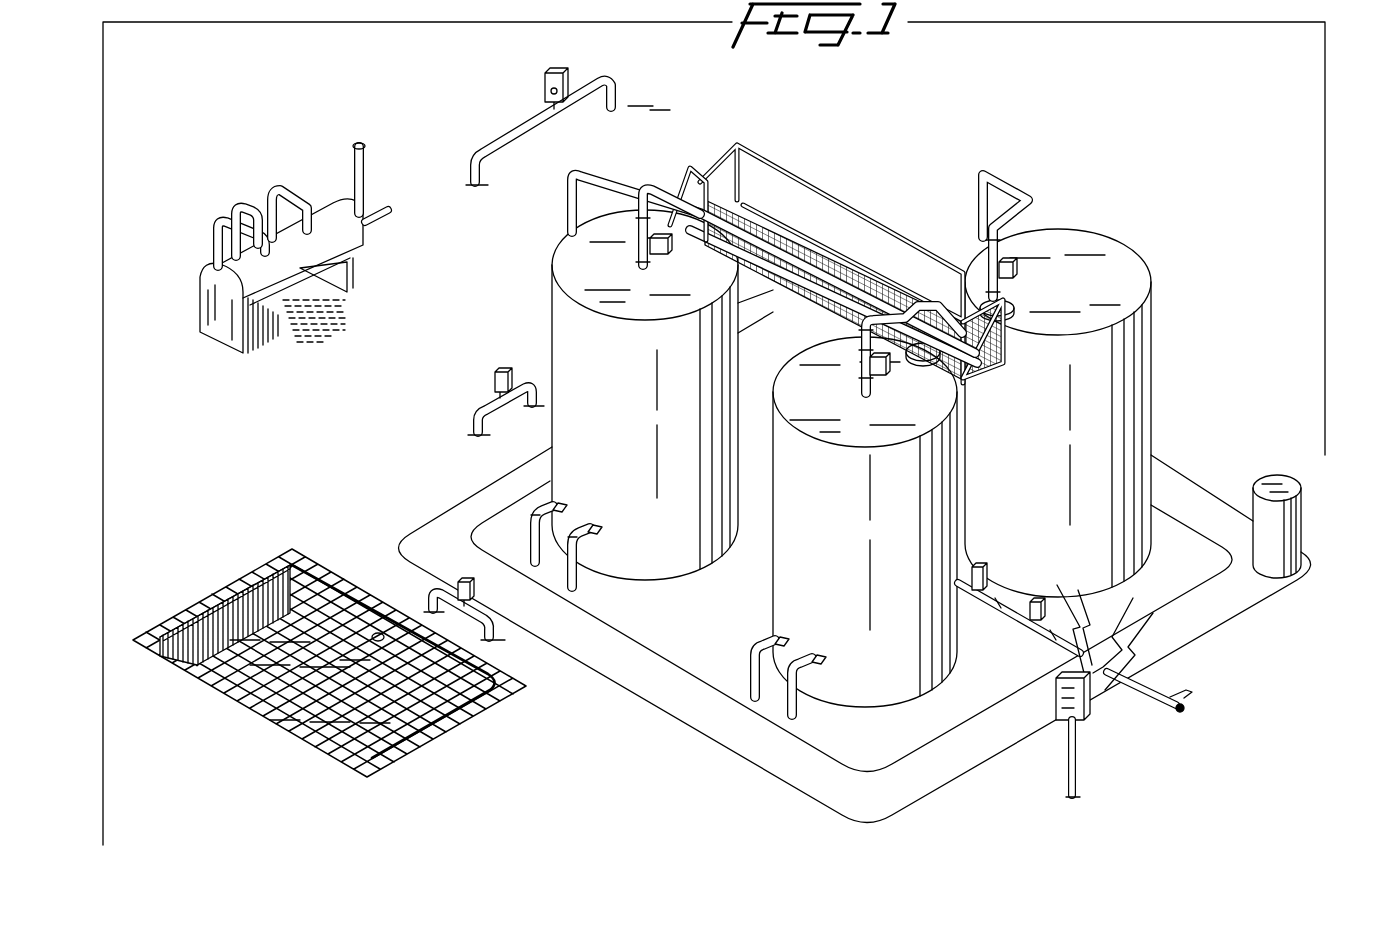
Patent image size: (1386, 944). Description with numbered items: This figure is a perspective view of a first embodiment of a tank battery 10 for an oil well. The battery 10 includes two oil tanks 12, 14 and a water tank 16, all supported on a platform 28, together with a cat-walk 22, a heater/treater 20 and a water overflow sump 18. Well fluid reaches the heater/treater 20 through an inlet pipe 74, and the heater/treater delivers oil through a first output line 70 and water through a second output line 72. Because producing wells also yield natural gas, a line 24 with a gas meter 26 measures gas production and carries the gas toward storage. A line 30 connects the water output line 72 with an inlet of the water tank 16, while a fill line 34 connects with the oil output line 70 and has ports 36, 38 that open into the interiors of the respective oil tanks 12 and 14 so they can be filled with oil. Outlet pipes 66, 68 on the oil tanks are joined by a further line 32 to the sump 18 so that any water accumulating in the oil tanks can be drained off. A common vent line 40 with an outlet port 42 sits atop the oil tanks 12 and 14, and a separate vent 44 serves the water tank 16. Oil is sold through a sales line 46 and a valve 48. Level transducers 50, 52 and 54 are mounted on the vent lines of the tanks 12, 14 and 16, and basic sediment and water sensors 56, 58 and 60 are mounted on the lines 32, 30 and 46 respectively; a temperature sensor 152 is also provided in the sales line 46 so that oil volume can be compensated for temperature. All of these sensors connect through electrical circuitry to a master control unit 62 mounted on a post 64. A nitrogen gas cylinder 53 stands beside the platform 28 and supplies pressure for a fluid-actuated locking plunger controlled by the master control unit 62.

The tank battery 10 is at (1168, 219).
The oil tank 12 is at (649, 427).
The oil tank 14 is at (862, 550).
The water tank 16 is at (1057, 440).
The water overflow sump 18 is at (278, 732).
The heater/treater 20 is at (226, 349).
The cat-walk 22 is at (862, 200).
The line 24 is at (488, 146).
The gas meter 26 is at (568, 78).
The platform 28 is at (1172, 512).
The line 30 is at (472, 428).
The line 32 is at (430, 596).
The fill line 34 is at (568, 218).
The port 36 is at (673, 212).
The port 38 is at (886, 333).
The common vent line 40 is at (648, 185).
The outlet port 42 is at (1006, 362).
The vent 44 is at (1008, 182).
The sales line 46 is at (1000, 610).
The valve 48 is at (1188, 706).
The level transducer 50 is at (662, 248).
The level transducer 52 is at (888, 375).
The nitrogen gas cylinder 53 is at (1302, 517).
The level transducer 54 is at (1016, 266).
The basic sediment and water sensor 56 is at (468, 580).
The basic sediment and water sensor 58 is at (490, 394).
The basic sediment and water sensor 60 is at (1035, 618).
The master control unit 62 is at (1052, 707).
The post 64 is at (1078, 758).
The outlet pipe 66 is at (541, 565).
The outlet pipe 68 is at (790, 695).
The first output line 70 is at (240, 208).
The second output line 72 is at (214, 232).
The inlet pipe 74 is at (288, 188).
The temperature sensor 152 is at (984, 575).